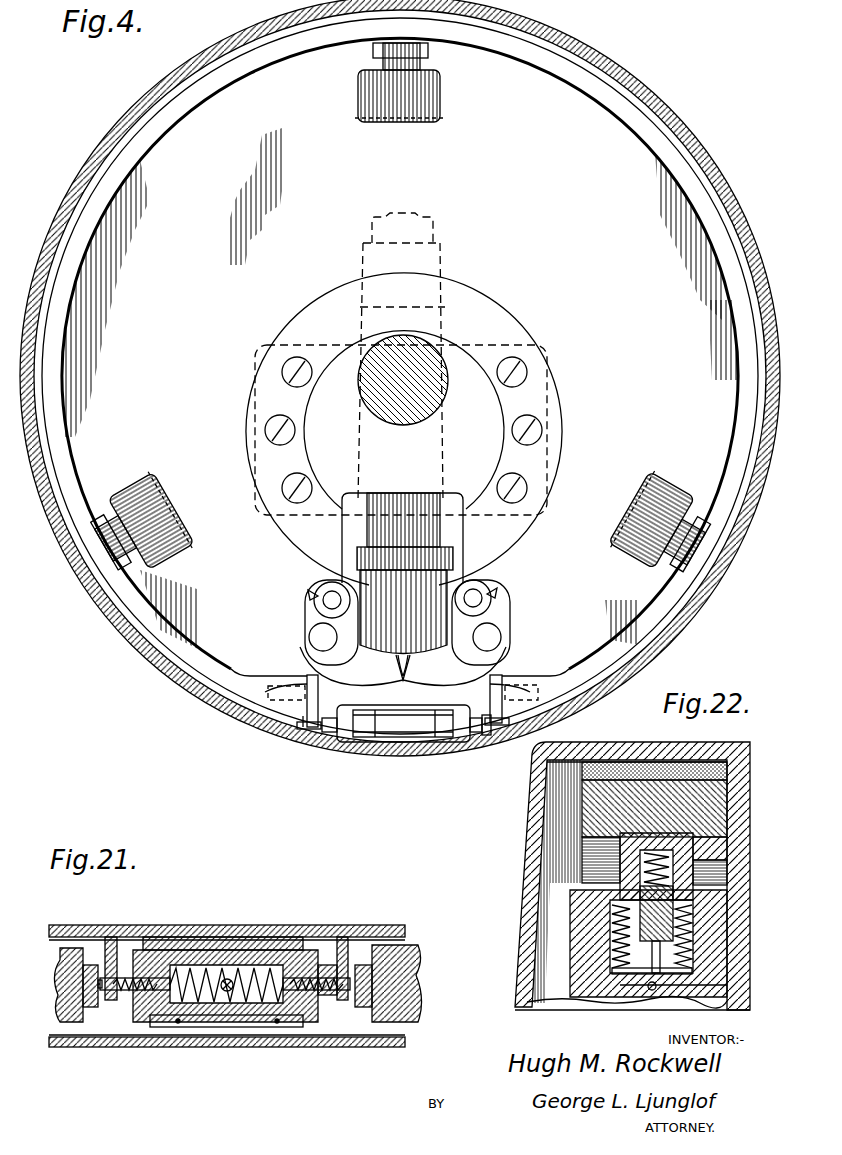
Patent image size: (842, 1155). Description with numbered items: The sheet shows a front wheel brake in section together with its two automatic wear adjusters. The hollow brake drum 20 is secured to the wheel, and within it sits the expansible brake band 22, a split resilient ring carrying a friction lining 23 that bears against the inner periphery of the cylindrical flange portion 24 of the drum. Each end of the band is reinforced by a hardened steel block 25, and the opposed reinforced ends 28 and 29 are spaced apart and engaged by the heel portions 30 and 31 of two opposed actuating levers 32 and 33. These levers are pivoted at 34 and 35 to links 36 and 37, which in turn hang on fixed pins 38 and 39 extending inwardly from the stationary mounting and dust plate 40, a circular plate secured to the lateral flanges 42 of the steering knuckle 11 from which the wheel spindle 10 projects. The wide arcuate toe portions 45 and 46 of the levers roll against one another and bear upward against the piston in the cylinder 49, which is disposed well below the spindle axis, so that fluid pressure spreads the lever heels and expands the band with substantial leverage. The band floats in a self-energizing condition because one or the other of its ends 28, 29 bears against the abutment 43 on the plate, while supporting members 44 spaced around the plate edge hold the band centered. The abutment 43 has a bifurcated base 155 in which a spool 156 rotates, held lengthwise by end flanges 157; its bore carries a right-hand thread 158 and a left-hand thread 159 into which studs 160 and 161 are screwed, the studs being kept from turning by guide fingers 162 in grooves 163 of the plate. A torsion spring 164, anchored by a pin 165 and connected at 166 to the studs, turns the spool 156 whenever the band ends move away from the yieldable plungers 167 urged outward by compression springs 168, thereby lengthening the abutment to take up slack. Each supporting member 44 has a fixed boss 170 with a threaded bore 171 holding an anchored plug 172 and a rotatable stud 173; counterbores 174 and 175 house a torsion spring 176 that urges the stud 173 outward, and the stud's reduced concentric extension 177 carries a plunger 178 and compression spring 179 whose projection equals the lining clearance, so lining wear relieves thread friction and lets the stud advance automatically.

In FIG. 4, the spindle 10 is at (430, 348).
In FIG. 4, the steering knuckle 11 is at (437, 318).
In FIG. 21, the brake drum 20 is at (380, 1045).
In FIG. 22, the brake drum 20 is at (540, 808).
In FIG. 4, the brake band 22 is at (210, 678).
In FIG. 22, the brake band 22 is at (700, 792).
In FIG. 4, the friction lining 23 is at (187, 676).
In FIG. 22, the friction lining 23 is at (730, 748).
In FIG. 4, the cylindrical flange portion 24 is at (155, 672).
In FIG. 22, the cylindrical flange portion 24 is at (735, 762).
In FIG. 4, the hardened steel block 25 is at (303, 722).
In FIG. 4, the reinforced band end 28 is at (312, 730).
In FIG. 21, the reinforced band end 28 is at (90, 985).
In FIG. 4, the reinforced band end 29 is at (495, 730).
In FIG. 21, the reinforced band end 29 is at (388, 983).
In FIG. 4, the heel portion 30 is at (345, 672).
In FIG. 4, the heel portion 31 is at (465, 672).
In FIG. 4, the actuating lever 32 is at (323, 640).
In FIG. 4, the actuating lever 33 is at (487, 644).
In FIG. 4, the pivot 34 is at (318, 628).
In FIG. 4, the pivot 35 is at (492, 640).
In FIG. 4, the link 36 is at (340, 606).
In FIG. 4, the link 37 is at (498, 612).
In FIG. 4, the fixed pin 38 is at (325, 597).
In FIG. 4, the fixed pin 39 is at (490, 598).
In FIG. 4, the mounting and dust plate 40 is at (400, 388).
In FIG. 21, the mounting and dust plate 40 is at (385, 925).
In FIG. 22, the mounting and dust plate 40 is at (740, 862).
In FIG. 4, the lateral flange 42 is at (540, 410).
In FIG. 4, the abutment 43 is at (406, 758).
In FIG. 21, the abutment 43 is at (228, 1028).
In FIG. 4, the supporting member 44 is at (447, 106).
In FIG. 4, the toe portion 45 is at (399, 675).
In FIG. 4, the toe portion 46 is at (399, 682).
In FIG. 4, the cylinder 49 is at (425, 610).
In FIG. 4, the bifurcated base 155 is at (400, 740).
In FIG. 21, the bifurcated base 155 is at (275, 945).
In FIG. 4, the spool 156 is at (392, 732).
In FIG. 21, the spool 156 is at (112, 1002).
In FIG. 21, the end flange 157 is at (115, 1002).
In FIG. 21, the right-hand thread 158 is at (170, 1025).
In FIG. 21, the left-hand thread 159 is at (190, 1025).
In FIG. 4, the screw-threaded stud 160 is at (335, 738).
In FIG. 21, the screw-threaded stud 160 is at (108, 1002).
In FIG. 4, the screw-threaded stud 161 is at (471, 745).
In FIG. 21, the screw-threaded stud 161 is at (350, 1012).
In FIG. 21, the guide finger 162 is at (340, 950).
In FIG. 21, the groove 163 is at (355, 948).
In FIG. 21, the torsion spring 164 is at (160, 980).
In FIG. 21, the pin 165 is at (232, 978).
In FIG. 21, the spring end connection 166 is at (150, 975).
In FIG. 21, the yieldable plunger 167 is at (88, 992).
In FIG. 21, the compression spring 168 is at (128, 965).
In FIG. 22, the fixed boss 170 is at (600, 905).
In FIG. 22, the threaded bore 171 is at (595, 915).
In FIG. 22, the plug 172 is at (600, 970).
In FIG. 22, the rotatable stud 173 is at (590, 922).
In FIG. 22, the counterbore 174 is at (705, 955).
In FIG. 22, the counterbore 175 is at (700, 920).
In FIG. 22, the torsion spring 176 is at (695, 946).
In FIG. 22, the reduced concentric extension 177 is at (582, 850).
In FIG. 22, the plunger 178 is at (665, 832).
In FIG. 22, the compression spring 179 is at (660, 856).